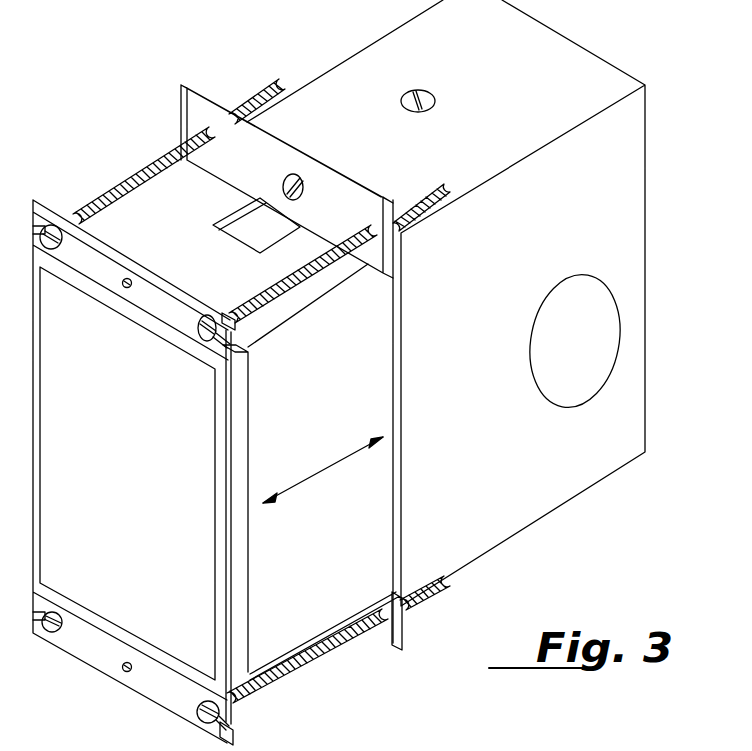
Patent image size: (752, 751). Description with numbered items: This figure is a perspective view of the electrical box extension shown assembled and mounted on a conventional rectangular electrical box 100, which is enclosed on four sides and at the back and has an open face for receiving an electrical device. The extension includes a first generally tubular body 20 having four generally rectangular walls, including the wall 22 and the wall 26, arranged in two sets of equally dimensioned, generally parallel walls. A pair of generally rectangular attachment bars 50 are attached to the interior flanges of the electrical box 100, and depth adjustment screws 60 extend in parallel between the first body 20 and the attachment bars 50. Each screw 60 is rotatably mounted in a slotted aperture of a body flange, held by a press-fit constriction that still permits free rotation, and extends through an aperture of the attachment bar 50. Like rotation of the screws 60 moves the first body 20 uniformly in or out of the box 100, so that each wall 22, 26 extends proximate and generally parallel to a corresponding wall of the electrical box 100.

The first body 20 is at (95, 658).
The wall 22 is at (338, 413).
The wall 26 is at (143, 233).
The attachment bar 50 is at (200, 108).
The depth adjustment screw 60 is at (143, 165).
The electrical box 100 is at (511, 515).